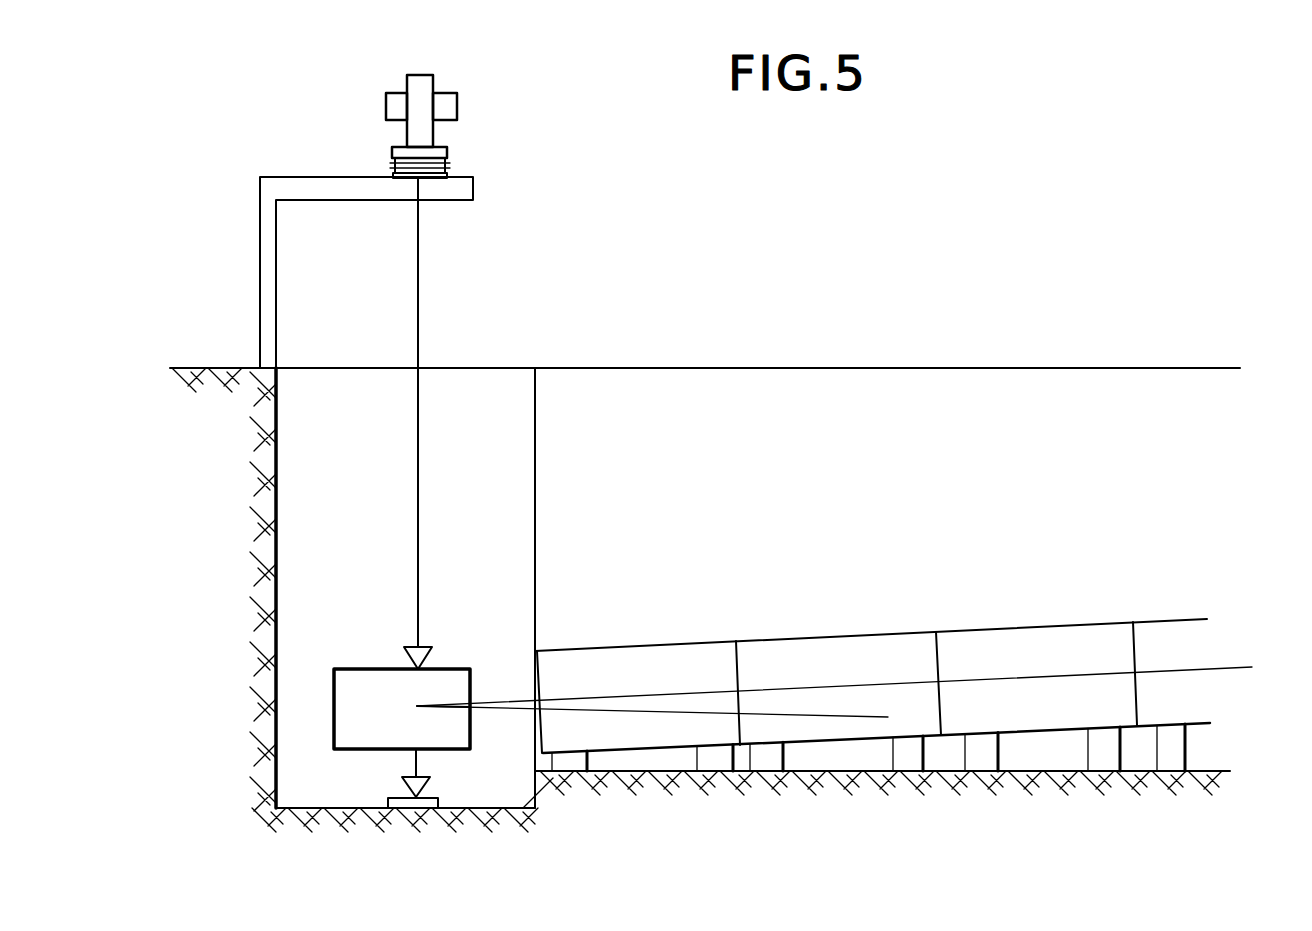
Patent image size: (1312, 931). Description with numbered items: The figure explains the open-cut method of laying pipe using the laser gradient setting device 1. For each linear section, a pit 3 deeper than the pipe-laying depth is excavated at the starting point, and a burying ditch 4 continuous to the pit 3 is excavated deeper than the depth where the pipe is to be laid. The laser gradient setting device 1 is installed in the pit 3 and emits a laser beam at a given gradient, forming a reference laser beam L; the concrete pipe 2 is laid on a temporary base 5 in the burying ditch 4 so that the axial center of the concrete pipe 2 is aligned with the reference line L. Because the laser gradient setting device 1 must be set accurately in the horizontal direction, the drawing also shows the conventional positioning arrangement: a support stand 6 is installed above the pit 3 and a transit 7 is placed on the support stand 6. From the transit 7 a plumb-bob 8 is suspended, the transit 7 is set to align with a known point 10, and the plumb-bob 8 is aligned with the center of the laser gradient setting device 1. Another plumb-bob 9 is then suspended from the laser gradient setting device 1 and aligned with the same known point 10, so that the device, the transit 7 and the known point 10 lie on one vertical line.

The laser gradient setting device 1 is at (367, 702).
The concrete pipe 2 is at (652, 668).
The pit 3 is at (480, 400).
The burying ditch 4 is at (950, 425).
The temporary base 5 is at (987, 742).
The support stand 6 is at (260, 297).
The transit 7 is at (432, 75).
The plumb-bob 8 is at (418, 301).
The plumb-bob 9 is at (412, 753).
The known point 10 is at (427, 780).
The reference laser beam L is at (1068, 677).